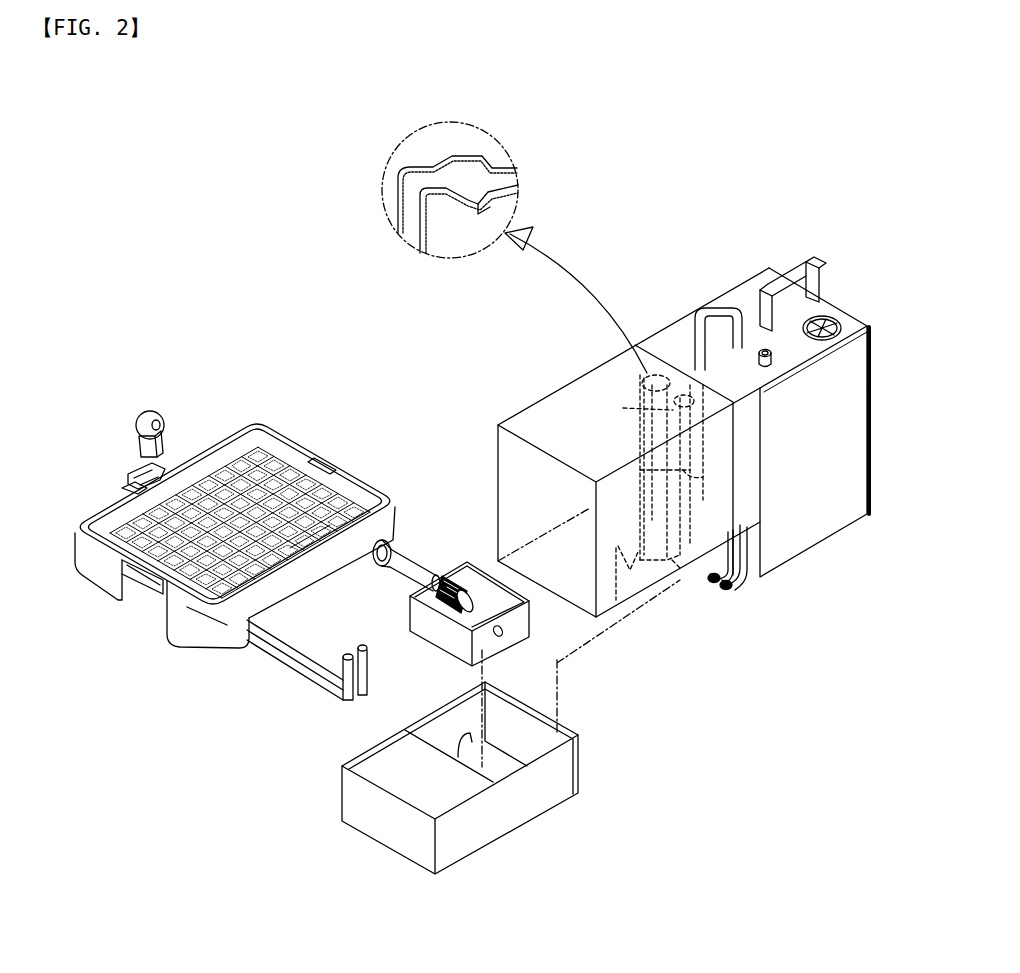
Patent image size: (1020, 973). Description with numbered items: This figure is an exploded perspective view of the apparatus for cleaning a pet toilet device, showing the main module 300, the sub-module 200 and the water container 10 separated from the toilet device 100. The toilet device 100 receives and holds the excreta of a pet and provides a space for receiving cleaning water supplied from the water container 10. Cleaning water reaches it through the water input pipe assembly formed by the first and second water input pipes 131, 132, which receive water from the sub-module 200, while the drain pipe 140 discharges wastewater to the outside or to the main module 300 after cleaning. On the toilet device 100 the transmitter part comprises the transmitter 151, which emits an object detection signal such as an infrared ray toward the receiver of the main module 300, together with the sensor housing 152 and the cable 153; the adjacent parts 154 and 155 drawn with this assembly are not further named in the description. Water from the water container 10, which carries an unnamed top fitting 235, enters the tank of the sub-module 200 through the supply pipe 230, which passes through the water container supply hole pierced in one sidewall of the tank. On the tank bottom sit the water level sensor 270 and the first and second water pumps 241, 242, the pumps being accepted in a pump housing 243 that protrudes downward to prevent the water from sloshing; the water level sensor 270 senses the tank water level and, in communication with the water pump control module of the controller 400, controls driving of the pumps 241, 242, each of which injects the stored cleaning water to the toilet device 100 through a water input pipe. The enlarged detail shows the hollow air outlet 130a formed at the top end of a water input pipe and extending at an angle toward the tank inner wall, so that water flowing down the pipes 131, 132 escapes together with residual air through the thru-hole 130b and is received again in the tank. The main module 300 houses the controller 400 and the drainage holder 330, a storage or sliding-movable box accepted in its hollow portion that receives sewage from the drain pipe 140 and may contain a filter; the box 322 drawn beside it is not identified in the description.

The water container 10 is at (744, 273).
The toilet device 100 is at (185, 653).
The air outlet 130a is at (492, 196).
The thru-hole 130b is at (492, 222).
The first water input pipe 131 is at (313, 677).
The second water input pipe 132 is at (280, 658).
The drain pipe 140 is at (425, 570).
The transmitter 151 is at (150, 405).
The sensor housing 152 is at (128, 490).
The cable 153 is at (137, 446).
The sensor arm 154 is at (163, 447).
The sensor pad 155 is at (132, 477).
The sub-module 200 is at (522, 402).
The supply pipe 230 is at (705, 492).
The handle 235 is at (718, 328).
The first water pump 241 is at (722, 582).
The second water pump 242 is at (678, 565).
The pump housing 243 is at (622, 548).
The water level sensor 270 is at (620, 560).
The main module 300 is at (384, 845).
The pump housing 322 is at (466, 563).
The drainage holder 330 is at (470, 614).
The controller 400 is at (405, 775).